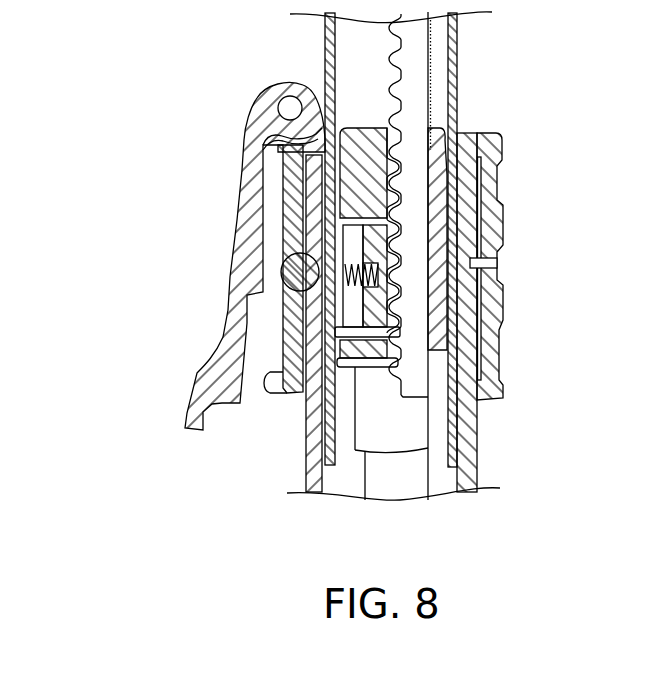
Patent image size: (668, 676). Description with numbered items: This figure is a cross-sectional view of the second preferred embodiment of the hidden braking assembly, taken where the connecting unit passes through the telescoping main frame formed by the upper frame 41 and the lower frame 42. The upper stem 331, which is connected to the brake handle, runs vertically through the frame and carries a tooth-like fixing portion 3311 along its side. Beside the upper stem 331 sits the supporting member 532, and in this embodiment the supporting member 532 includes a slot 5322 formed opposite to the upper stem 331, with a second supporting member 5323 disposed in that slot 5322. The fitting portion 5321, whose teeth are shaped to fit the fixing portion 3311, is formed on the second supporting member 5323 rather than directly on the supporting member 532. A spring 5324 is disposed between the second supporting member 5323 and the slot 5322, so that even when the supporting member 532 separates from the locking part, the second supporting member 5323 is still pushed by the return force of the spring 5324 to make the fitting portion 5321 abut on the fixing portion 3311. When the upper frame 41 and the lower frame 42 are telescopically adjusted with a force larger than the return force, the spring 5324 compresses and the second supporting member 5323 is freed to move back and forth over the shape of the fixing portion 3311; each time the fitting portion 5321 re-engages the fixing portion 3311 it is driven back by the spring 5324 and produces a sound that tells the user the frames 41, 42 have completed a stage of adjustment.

The upper stem 331 is at (401, 256).
The fixing portion 3311 is at (400, 76).
The upper frame 41 is at (453, 92).
The lower frame 42 is at (308, 464).
The supporting member 532 is at (330, 215).
The fitting portion 5321 is at (400, 285).
The slot 5322 is at (352, 252).
The second supporting member 5323 is at (338, 322).
The spring 5324 is at (335, 327).